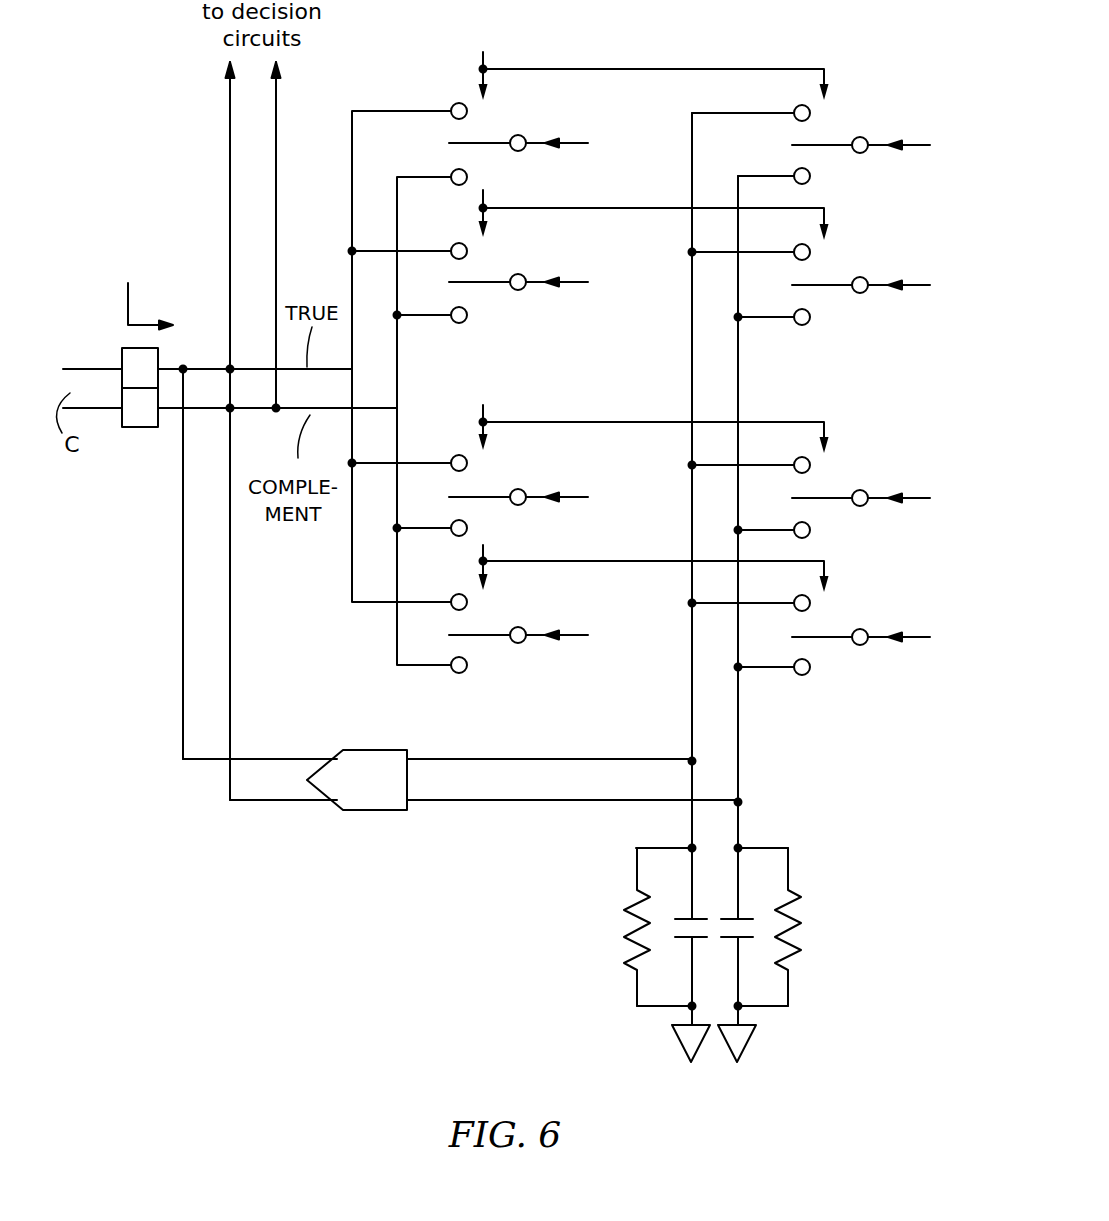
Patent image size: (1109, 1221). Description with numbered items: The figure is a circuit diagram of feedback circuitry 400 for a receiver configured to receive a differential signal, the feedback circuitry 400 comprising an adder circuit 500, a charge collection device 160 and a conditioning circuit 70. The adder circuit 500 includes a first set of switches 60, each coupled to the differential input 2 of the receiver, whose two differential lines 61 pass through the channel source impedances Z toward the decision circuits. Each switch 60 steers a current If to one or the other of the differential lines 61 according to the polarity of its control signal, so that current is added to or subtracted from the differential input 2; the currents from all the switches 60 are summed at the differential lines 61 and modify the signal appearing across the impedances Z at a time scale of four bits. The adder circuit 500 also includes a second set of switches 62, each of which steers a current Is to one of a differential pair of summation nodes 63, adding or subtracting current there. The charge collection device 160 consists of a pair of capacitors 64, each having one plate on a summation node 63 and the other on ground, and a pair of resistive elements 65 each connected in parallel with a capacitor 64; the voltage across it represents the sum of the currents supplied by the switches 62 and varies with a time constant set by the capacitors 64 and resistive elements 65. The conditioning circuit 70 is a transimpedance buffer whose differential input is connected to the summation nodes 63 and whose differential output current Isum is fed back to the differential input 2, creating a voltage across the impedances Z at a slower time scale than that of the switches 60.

The feedback circuitry 400 is at (138, 95).
The adder circuit 500 is at (732, 38).
The differential input 2 is at (146, 292).
The first set of switches 60 is at (440, 88).
The differential lines 61 is at (198, 362).
The second set of switches 62 is at (843, 116).
The summation nodes 63 is at (688, 740).
The capacitors 64 is at (752, 906).
The resistive elements 65 is at (615, 922).
The conditioning circuit 70 is at (393, 812).
The charge collection device 160 is at (810, 800).